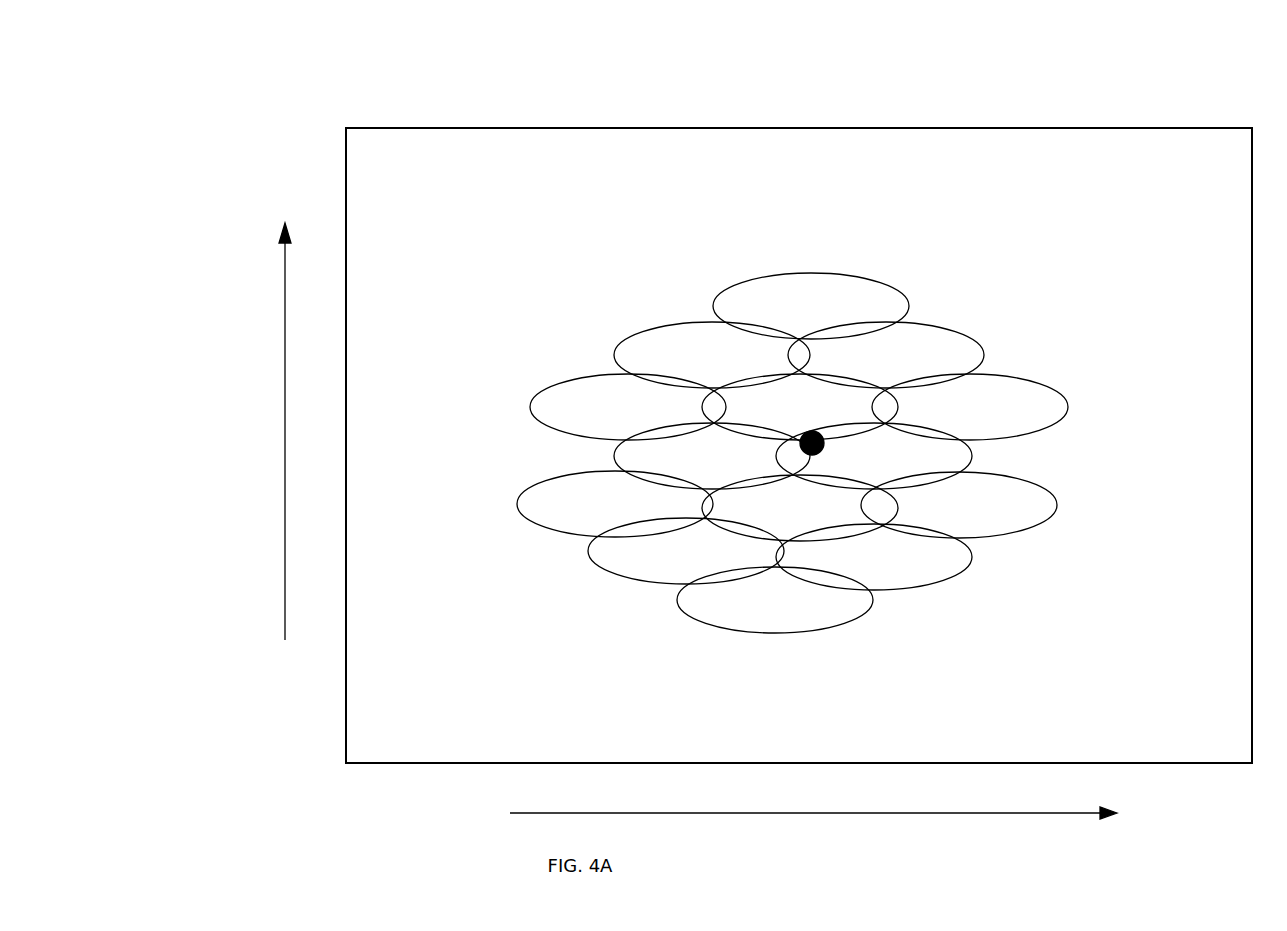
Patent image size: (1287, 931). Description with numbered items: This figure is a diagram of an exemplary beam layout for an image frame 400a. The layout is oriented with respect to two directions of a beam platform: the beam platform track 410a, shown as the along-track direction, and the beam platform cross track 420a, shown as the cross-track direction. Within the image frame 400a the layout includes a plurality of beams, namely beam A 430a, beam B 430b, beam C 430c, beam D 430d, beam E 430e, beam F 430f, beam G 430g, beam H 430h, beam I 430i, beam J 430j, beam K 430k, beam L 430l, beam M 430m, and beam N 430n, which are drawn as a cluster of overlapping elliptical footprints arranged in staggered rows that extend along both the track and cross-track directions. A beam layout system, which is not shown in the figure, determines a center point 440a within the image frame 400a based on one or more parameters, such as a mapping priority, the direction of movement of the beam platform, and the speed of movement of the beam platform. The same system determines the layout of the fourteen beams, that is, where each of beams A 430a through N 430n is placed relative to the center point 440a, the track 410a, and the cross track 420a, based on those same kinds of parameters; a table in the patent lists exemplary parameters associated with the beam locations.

The image frame 400a is at (799, 389).
The beam platform track 410a is at (251, 431).
The beam platform cross track 420a is at (813, 835).
The beam A 430a is at (874, 456).
The beam B 430b is at (970, 407).
The beam C 430c is at (800, 407).
The beam D 430d is at (800, 508).
The beam E 430e is at (959, 505).
The beam F 430f is at (686, 551).
The beam G 430g is at (874, 557).
The beam H 430h is at (775, 600).
The beam I 430i is at (615, 504).
The beam J 430j is at (712, 456).
The beam K 430k is at (628, 407).
The beam L 430l is at (712, 355).
The beam M 430m is at (886, 355).
The beam N 430n is at (811, 306).
The center point 440a is at (978, 526).